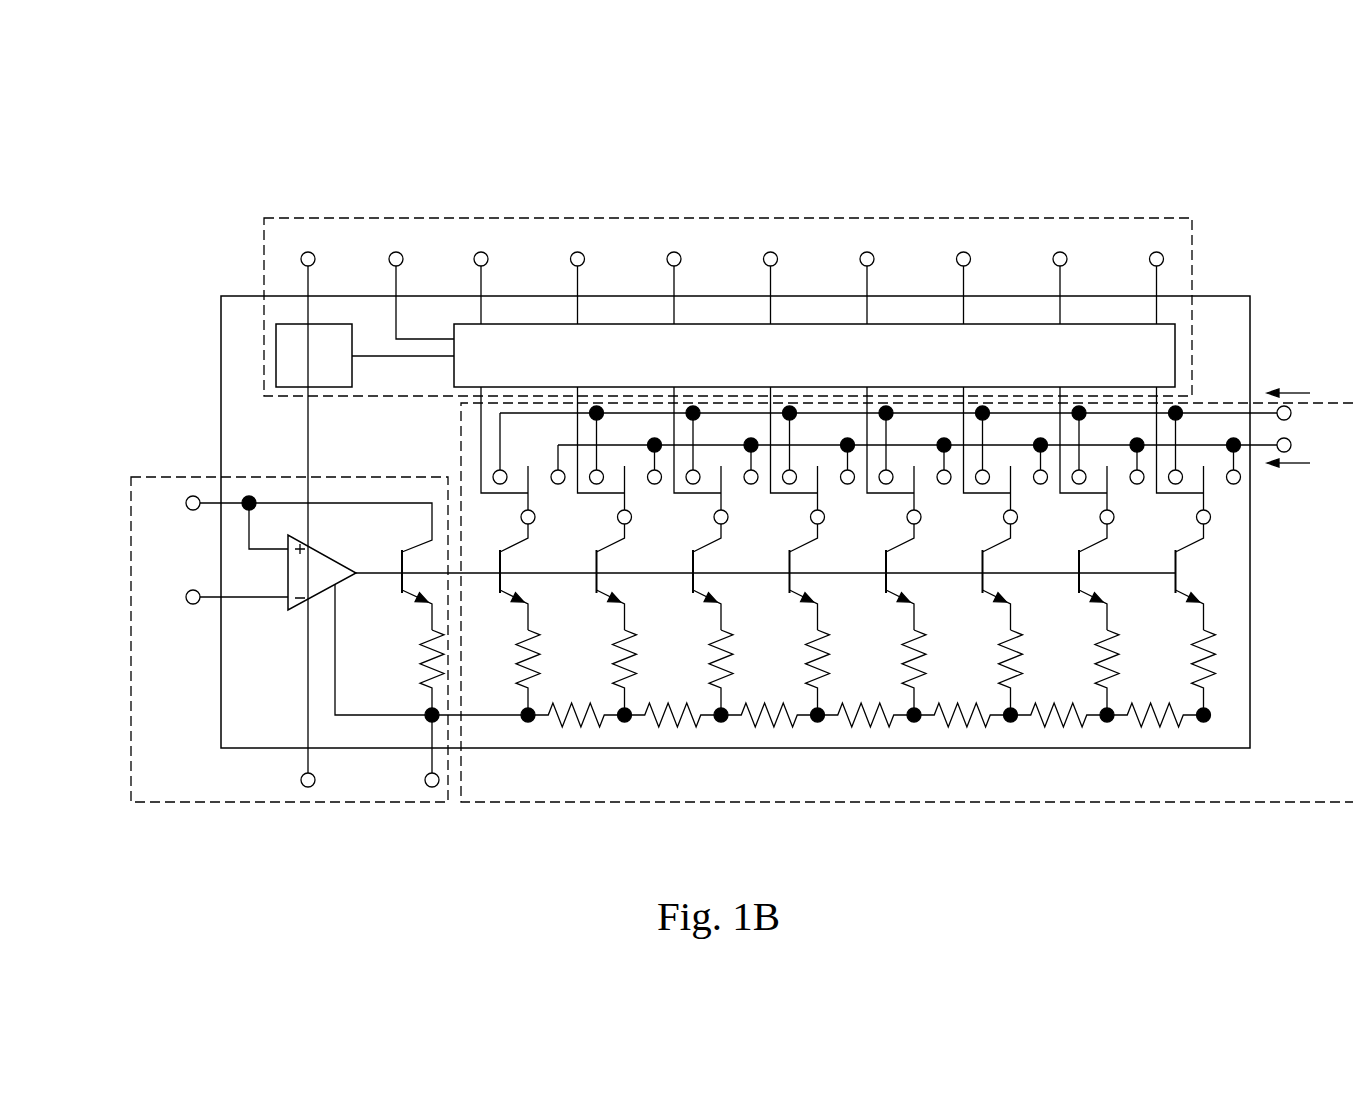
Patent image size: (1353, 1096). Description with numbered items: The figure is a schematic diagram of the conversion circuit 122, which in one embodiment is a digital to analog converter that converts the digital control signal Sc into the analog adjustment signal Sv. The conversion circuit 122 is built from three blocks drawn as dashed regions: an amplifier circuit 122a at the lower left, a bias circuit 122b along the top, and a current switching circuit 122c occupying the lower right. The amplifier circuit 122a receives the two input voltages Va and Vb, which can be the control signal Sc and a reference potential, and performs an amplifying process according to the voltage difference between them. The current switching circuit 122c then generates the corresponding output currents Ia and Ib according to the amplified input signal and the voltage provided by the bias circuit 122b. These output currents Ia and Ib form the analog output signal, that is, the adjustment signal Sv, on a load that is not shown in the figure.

The conversion circuit 122 is at (114, 41).
The amplifier circuit 122a is at (310, 802).
The bias circuit 122b is at (820, 218).
The current switching circuit 122c is at (916, 802).